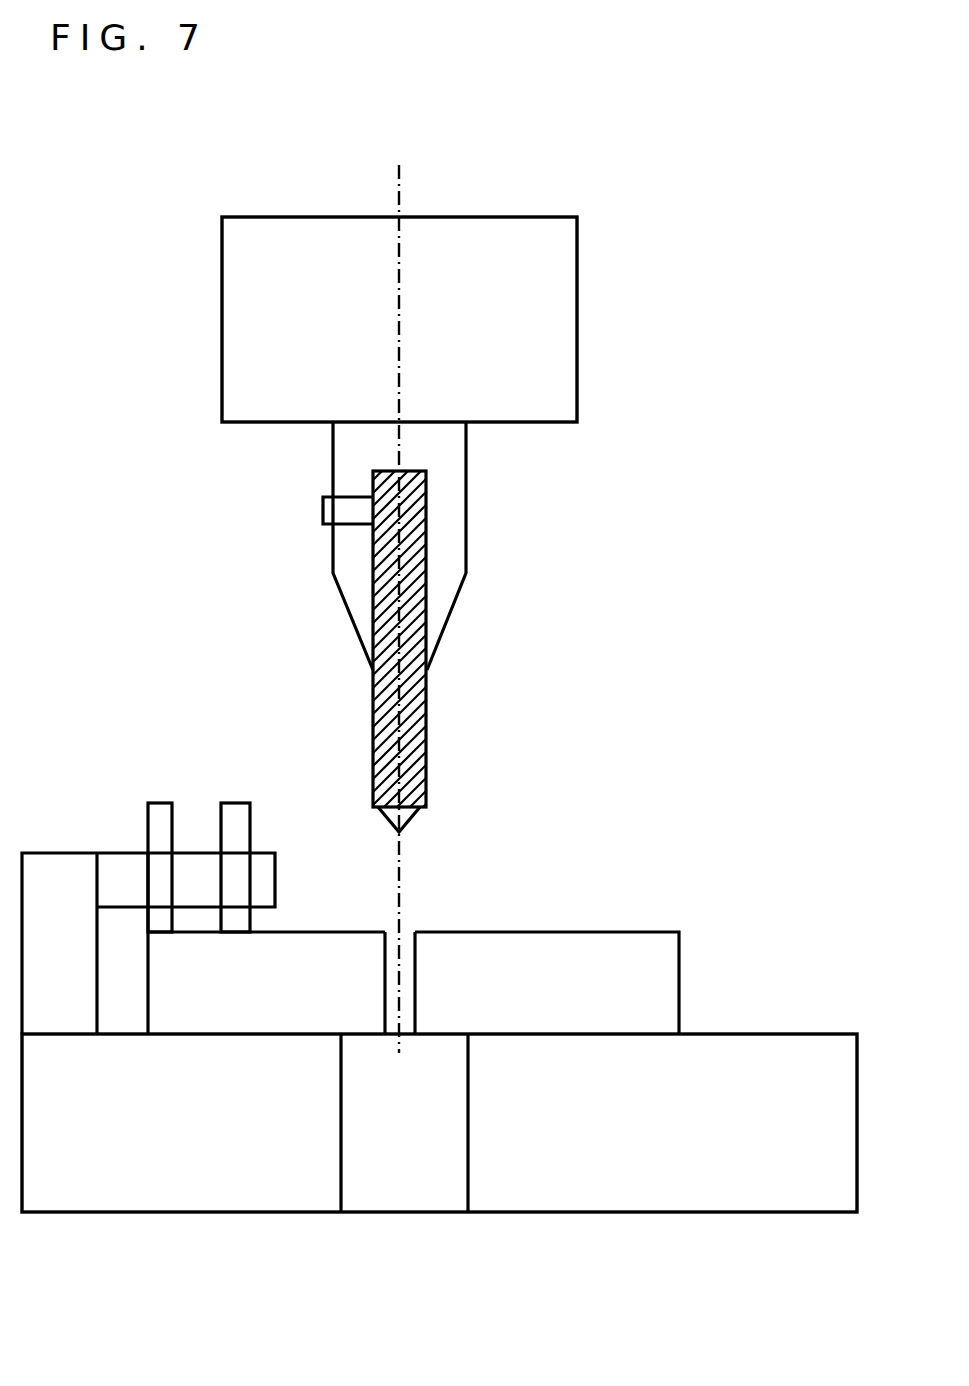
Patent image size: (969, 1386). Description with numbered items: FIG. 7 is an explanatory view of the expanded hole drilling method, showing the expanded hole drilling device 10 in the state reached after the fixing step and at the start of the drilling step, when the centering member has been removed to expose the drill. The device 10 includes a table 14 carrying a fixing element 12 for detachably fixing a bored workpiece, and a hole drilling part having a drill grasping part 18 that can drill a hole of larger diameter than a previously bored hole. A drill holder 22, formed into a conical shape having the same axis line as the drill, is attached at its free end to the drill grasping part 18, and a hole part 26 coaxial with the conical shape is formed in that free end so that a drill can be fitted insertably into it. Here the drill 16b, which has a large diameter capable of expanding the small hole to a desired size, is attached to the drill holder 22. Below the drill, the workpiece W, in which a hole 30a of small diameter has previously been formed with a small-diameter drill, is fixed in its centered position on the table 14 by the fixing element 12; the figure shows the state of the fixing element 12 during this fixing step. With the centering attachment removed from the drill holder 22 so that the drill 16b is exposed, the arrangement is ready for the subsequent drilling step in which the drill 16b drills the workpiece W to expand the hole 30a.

The expanded hole drilling device 10 is at (418, 133).
The drill grasping part 18 is at (222, 267).
The drill holder 22 is at (468, 523).
The hole part 26 is at (418, 517).
The drill 16b is at (373, 697).
The fixing element 12 is at (146, 828).
The workpiece W is at (596, 931).
The hole 30a is at (398, 965).
The table 14 is at (720, 1033).